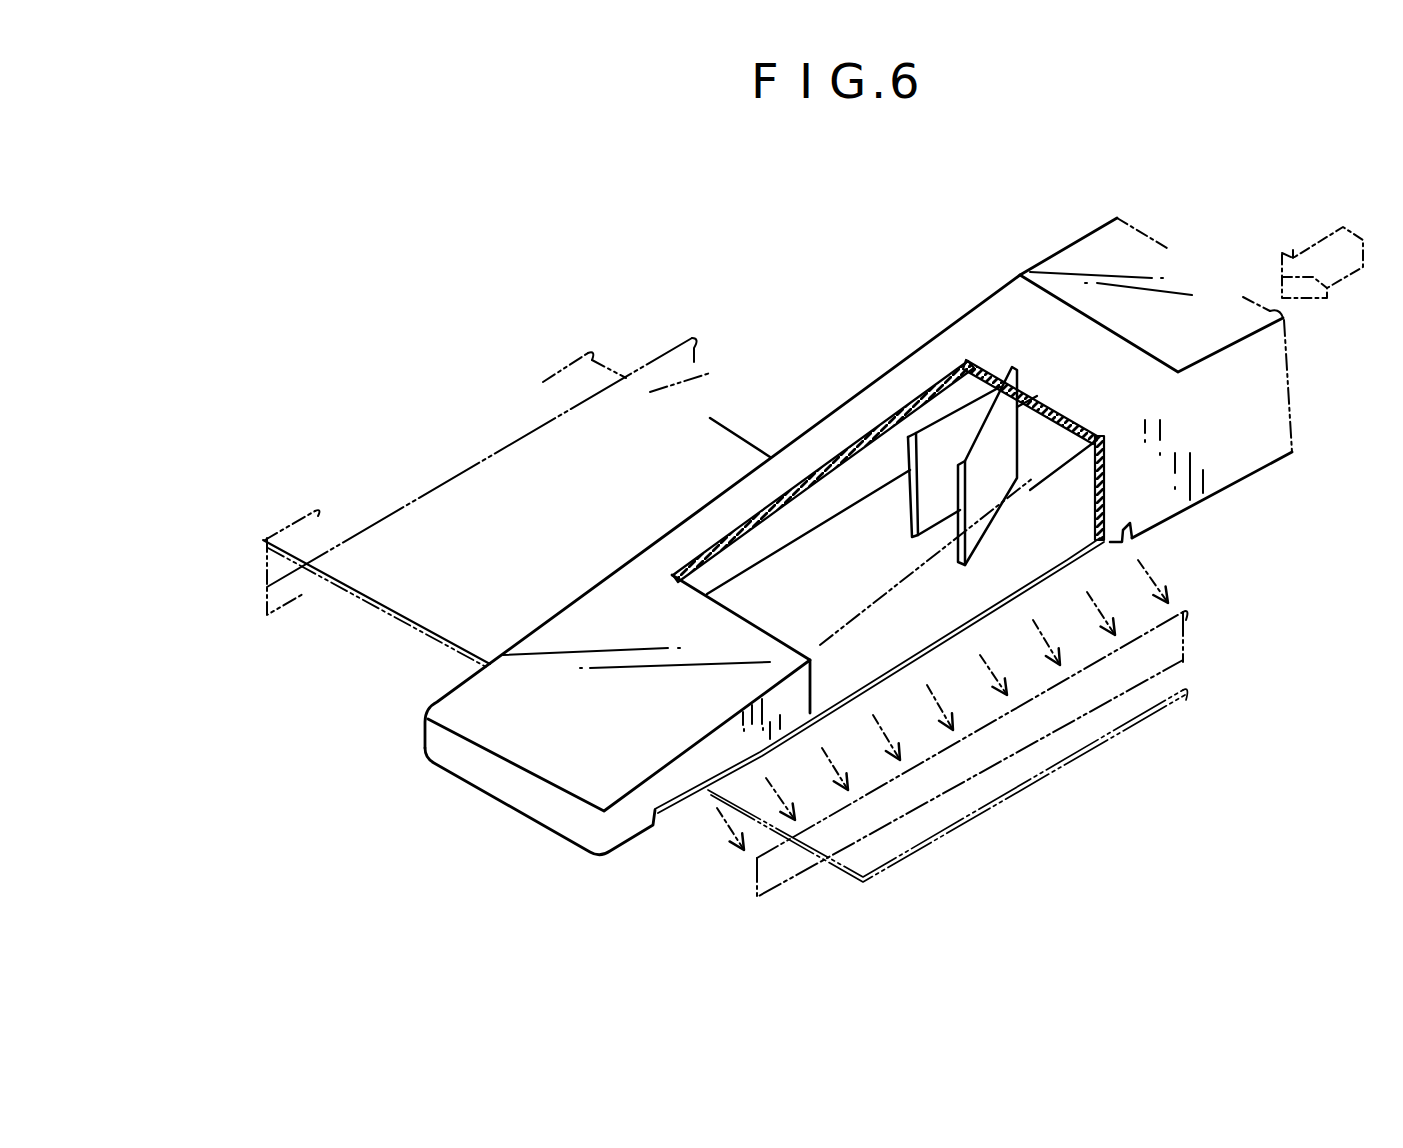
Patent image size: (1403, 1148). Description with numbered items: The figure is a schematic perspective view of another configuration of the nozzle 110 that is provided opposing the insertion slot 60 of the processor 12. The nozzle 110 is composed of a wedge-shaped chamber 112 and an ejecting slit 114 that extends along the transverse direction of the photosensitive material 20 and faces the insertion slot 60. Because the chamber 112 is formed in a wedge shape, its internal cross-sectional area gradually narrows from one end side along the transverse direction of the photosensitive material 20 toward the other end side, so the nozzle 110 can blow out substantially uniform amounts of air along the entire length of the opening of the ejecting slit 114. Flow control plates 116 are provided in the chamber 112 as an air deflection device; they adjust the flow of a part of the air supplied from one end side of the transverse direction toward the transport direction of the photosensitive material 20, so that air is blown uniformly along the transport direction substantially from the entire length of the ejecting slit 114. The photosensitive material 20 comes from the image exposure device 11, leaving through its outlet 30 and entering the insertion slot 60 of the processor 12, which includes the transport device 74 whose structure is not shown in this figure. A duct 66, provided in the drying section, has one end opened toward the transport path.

The image exposure device 11 is at (445, 483).
The processor 12 is at (947, 785).
The photosensitive material 20 is at (712, 420).
The outlet 30 is at (692, 348).
The insertion slot 60 is at (1184, 626).
The duct 66 is at (1092, 225).
The transport device 74 is at (447, 878).
The nozzle 110 is at (858, 604).
The wedge-shaped chamber 112 is at (636, 580).
The ejecting slit 114 is at (1168, 541).
The flow control plates 116 is at (957, 422).